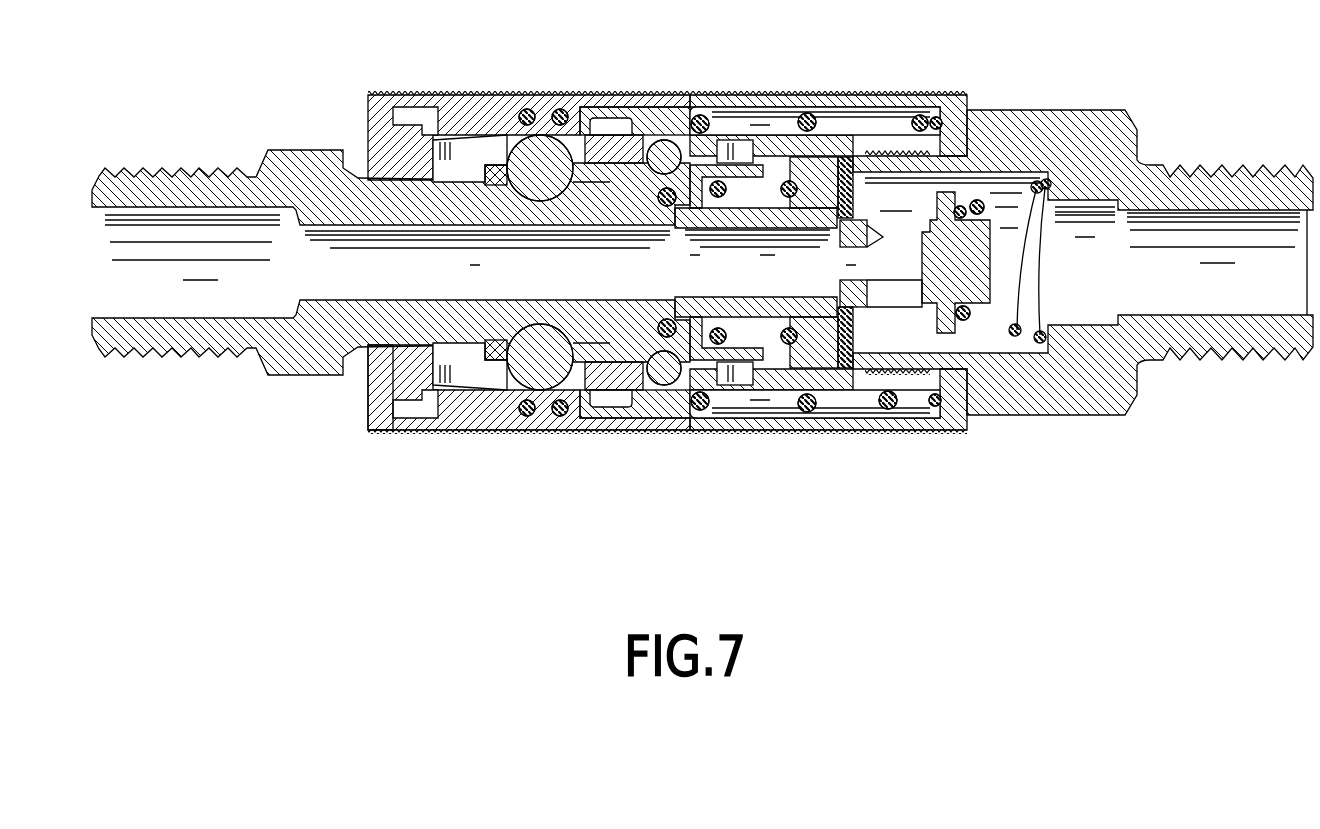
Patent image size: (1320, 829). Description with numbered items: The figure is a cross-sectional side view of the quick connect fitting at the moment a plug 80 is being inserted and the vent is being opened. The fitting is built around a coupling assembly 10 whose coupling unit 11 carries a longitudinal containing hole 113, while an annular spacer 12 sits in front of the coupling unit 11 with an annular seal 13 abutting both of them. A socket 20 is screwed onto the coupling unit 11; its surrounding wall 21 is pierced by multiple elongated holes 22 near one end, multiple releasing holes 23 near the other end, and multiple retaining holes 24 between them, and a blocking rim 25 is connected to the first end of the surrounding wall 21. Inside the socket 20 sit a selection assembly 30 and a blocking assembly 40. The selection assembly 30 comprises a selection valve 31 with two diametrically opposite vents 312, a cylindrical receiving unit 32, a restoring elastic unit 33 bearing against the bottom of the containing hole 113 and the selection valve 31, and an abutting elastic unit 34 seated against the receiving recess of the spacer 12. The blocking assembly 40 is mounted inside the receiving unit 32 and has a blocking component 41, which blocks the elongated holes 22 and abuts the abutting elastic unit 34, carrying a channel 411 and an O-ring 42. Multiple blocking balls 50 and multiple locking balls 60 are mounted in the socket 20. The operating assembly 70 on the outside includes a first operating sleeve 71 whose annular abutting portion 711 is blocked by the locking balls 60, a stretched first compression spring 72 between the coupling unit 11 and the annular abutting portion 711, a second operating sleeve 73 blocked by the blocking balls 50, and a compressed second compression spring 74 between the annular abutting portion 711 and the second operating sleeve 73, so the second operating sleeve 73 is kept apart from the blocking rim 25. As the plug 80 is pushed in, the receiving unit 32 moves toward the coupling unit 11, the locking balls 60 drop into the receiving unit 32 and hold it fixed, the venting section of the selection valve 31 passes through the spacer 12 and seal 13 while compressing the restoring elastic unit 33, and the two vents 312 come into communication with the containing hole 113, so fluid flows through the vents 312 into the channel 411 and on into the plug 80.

The coupling assembly 10 is at (1120, 90).
The coupling unit 11 is at (1028, 107).
The spacer 12 is at (808, 363).
The seal 13 is at (843, 360).
The socket 20 is at (362, 117).
The surrounding wall 21 is at (700, 380).
The elongated holes 22 is at (591, 395).
The releasing holes 23 is at (730, 138).
The retaining holes 24 is at (660, 388).
The blocking rim 25 is at (383, 390).
The selection assembly 30 is at (951, 190).
The selection valve 31 is at (902, 295).
The vents 312 is at (870, 247).
The receiving unit 32 is at (491, 153).
The restoring elastic unit 33 is at (1040, 248).
The abutting elastic unit 34 is at (746, 385).
The blocking assembly 40 is at (625, 392).
The blocking component 41 is at (594, 333).
The channel 411 is at (757, 218).
The O-ring 42 is at (664, 206).
The blocking balls 50 is at (543, 160).
The locking balls 60 is at (665, 140).
The operating assembly 70 is at (898, 88).
The first operating sleeve 71 is at (843, 100).
The annular abutting portion 711 is at (652, 140).
The first compression spring 72 is at (805, 112).
The second operating sleeve 73 is at (471, 428).
The second compression spring 74 is at (540, 405).
The plug 80 is at (290, 362).
The containing hole 113 is at (952, 203).